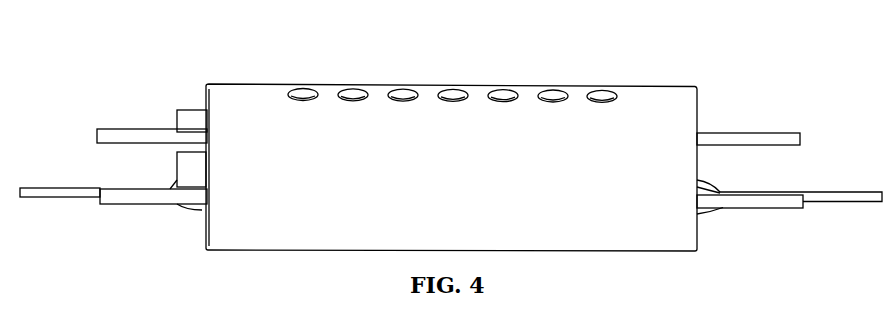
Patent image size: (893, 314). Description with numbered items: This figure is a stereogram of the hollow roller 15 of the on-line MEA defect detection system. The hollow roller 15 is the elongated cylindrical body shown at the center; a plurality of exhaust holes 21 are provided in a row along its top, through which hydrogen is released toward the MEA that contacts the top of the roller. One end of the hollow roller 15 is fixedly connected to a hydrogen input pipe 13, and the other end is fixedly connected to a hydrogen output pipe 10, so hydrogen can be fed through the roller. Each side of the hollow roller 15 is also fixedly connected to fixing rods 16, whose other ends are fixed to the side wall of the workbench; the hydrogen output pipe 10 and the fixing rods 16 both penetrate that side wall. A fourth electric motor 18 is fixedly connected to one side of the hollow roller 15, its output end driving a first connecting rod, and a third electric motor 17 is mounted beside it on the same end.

The hydrogen output pipe 10 is at (789, 122).
The hydrogen input pipe 13 is at (112, 120).
The hollow roller 15 is at (451, 140).
The fixing rod 16 is at (143, 86).
The third electric motor 17 is at (181, 81).
The fourth electric motor 18 is at (162, 109).
The exhaust hole 21 is at (446, 66).